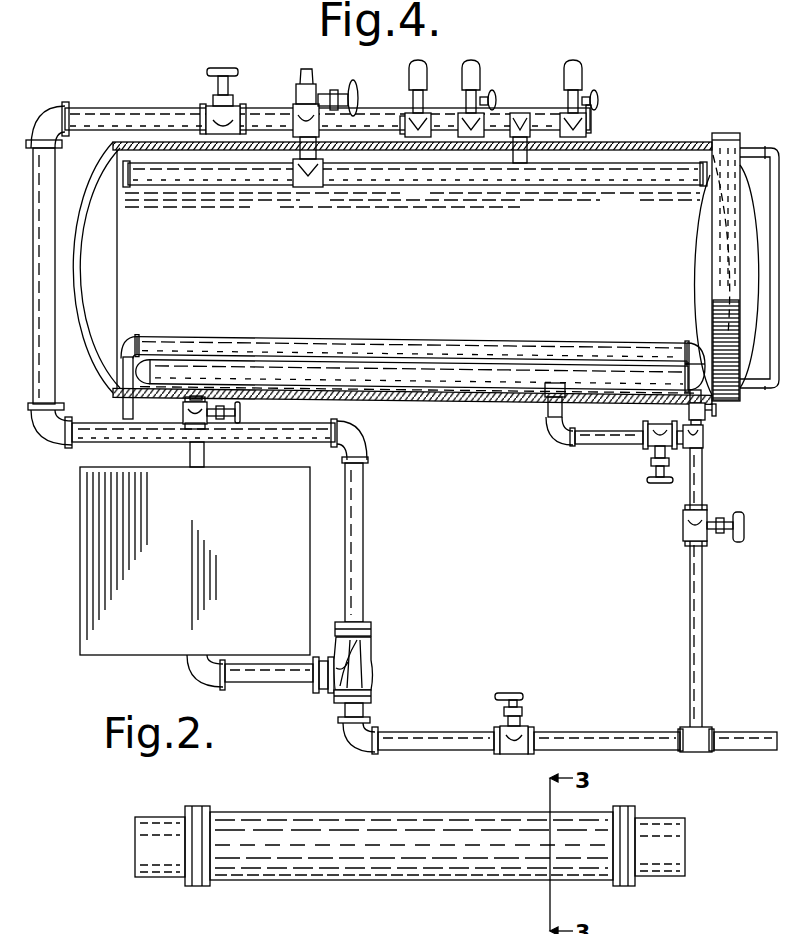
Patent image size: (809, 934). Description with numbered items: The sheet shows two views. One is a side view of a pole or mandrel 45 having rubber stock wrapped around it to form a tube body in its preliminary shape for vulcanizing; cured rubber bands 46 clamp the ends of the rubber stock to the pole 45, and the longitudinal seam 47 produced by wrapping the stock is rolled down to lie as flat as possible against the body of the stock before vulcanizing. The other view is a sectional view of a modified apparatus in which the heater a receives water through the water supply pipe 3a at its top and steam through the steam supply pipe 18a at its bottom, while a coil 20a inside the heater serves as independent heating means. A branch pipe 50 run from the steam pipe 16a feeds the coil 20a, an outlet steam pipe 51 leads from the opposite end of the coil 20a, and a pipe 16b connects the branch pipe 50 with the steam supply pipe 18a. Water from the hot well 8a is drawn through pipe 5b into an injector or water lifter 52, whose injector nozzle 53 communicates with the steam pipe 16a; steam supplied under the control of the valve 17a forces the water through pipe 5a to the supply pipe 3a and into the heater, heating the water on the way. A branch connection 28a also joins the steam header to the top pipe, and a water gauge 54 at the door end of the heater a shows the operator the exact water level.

In FIG. 4, the heater a is at (84, 304).
In FIG. 4, the water supply pipe 3a is at (362, 177).
In FIG. 4, the steam branch connection 28a is at (515, 167).
In FIG. 4, the coil 20a is at (271, 342).
In FIG. 4, the steam supply pipe 18a is at (326, 383).
In FIG. 4, the water gauge 54 is at (773, 283).
In FIG. 4, the pipe 5a is at (44, 390).
In FIG. 4, the outlet steam pipe 51 is at (132, 418).
In FIG. 4, the hot well 8a is at (195, 561).
In FIG. 4, the injector nozzle 53 is at (372, 633).
In FIG. 4, the injector 52 is at (367, 652).
In FIG. 4, the pipe 16b is at (590, 433).
In FIG. 4, the branch pipe 50 is at (702, 577).
In FIG. 4, the steam pipe 16a is at (445, 742).
In FIG. 4, the valve 17a is at (510, 740).
In FIG. 4, the pipe 5b is at (267, 687).
In FIG. 2, the pole or mandrel 45 is at (157, 837).
In FIG. 2, the cured rubber bands 46 is at (195, 880).
In FIG. 2, the longitudinal seam 47 is at (305, 837).